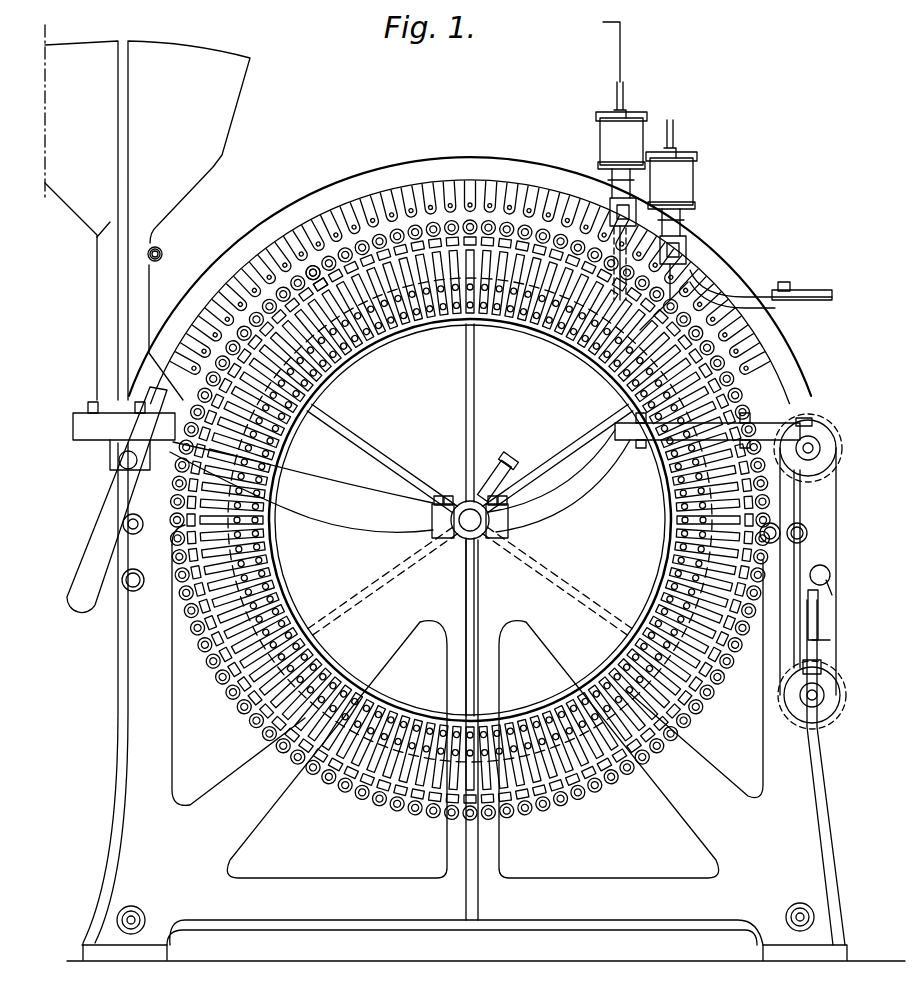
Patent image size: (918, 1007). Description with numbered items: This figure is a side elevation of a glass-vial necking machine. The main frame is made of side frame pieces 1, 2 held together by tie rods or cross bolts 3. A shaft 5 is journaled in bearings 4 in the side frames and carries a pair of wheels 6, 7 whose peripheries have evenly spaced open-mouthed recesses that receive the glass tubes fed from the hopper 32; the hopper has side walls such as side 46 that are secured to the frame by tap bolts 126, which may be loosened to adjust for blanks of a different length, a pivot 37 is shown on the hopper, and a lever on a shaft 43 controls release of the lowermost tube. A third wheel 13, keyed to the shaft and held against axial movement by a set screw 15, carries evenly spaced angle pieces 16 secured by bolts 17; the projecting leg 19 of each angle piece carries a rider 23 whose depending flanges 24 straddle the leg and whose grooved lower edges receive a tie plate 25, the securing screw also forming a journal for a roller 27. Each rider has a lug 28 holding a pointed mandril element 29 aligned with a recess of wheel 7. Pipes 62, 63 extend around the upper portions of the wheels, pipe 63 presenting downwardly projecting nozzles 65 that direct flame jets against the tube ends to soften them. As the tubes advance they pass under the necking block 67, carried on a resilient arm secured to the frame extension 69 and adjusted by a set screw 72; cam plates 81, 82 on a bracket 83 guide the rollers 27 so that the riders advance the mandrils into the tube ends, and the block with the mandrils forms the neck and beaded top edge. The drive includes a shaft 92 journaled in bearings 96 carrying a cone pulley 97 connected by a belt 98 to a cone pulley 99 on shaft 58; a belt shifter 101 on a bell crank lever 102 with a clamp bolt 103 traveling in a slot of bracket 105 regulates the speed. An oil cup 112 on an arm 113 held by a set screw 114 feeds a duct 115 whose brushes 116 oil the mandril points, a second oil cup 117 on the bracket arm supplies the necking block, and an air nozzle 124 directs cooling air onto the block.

The side frame piece 1 is at (120, 689).
The side frame piece 2 is at (348, 532).
The tie rods or cross bolts 3 is at (139, 914).
The bearings 4 is at (456, 502).
The shaft 5 is at (476, 530).
The wheel 6 is at (566, 378).
The wheel 7 is at (330, 290).
The third wheel 13 is at (422, 322).
The set screw 15 is at (512, 468).
The angle pieces 16 is at (386, 322).
The bolts 17 is at (646, 470).
The projecting leg 19 is at (402, 808).
The rider 23 is at (340, 790).
The depending flanges 24 is at (520, 812).
The tie plate 25 is at (434, 812).
The roller 27 is at (382, 803).
The lug 28 is at (620, 784).
The mandril elements 29 is at (453, 218).
The hopper 32 is at (210, 128).
The pivot pin 37 is at (163, 253).
The shaft 43 is at (122, 525).
The side of hopper 46 is at (110, 222).
The shaft 58 is at (803, 713).
The pipe 62 is at (178, 608).
The pipe 63 is at (512, 172).
The nozzles 65 is at (476, 210).
The necking block 67 is at (723, 293).
The frame extension 69 is at (710, 320).
The set screw 72 is at (688, 282).
The cam plate 81 is at (620, 318).
The cam plate 82 is at (617, 422).
The bracket 83 is at (595, 305).
The shaft 92 is at (822, 426).
The bearings 96 is at (806, 420).
The cone pulley 97 is at (826, 440).
The belt 98 is at (832, 518).
The cone pulley 99 is at (818, 723).
The belt shifter 101 is at (826, 637).
The bell crank lever 102 is at (810, 578).
The clamp bolt 103 is at (830, 585).
The bracket 105 is at (812, 628).
The oil cup 112 is at (612, 132).
The arm 113 is at (612, 208).
The set screw 114 is at (612, 176).
The duct 115 is at (626, 256).
The brushes 116 is at (628, 265).
The oil cup 117 is at (684, 176).
The air nozzle 124 is at (815, 292).
The tap bolts 126 is at (165, 402).